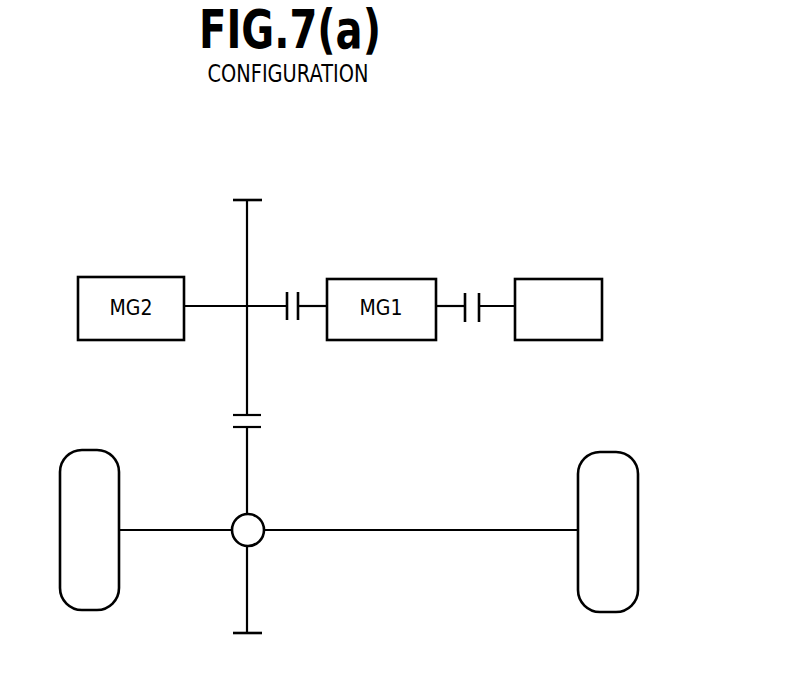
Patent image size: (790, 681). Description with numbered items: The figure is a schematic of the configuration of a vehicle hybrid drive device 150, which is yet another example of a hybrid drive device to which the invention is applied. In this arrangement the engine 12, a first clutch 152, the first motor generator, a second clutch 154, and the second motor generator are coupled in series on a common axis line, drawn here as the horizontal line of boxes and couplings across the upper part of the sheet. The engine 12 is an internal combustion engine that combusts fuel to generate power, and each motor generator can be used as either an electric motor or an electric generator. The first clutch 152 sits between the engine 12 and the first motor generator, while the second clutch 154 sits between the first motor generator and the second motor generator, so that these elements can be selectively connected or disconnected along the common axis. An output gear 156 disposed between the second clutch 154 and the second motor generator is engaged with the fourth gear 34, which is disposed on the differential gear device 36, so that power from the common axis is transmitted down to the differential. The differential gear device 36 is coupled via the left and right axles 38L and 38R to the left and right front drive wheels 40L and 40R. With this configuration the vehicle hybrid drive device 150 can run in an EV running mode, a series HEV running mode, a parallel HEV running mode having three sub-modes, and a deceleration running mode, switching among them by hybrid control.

The vehicle hybrid drive device 150 is at (124, 186).
The output gear 156 is at (255, 200).
The second clutch 154 is at (303, 262).
The first clutch 152 is at (488, 262).
The engine 12 is at (552, 332).
The differential gear device 36 is at (243, 527).
The left axle 38L is at (179, 533).
The right axle 38R is at (453, 533).
The left front drive wheel 40L is at (94, 594).
The right front drive wheel 40R is at (609, 598).
The fourth gear 34 is at (259, 633).